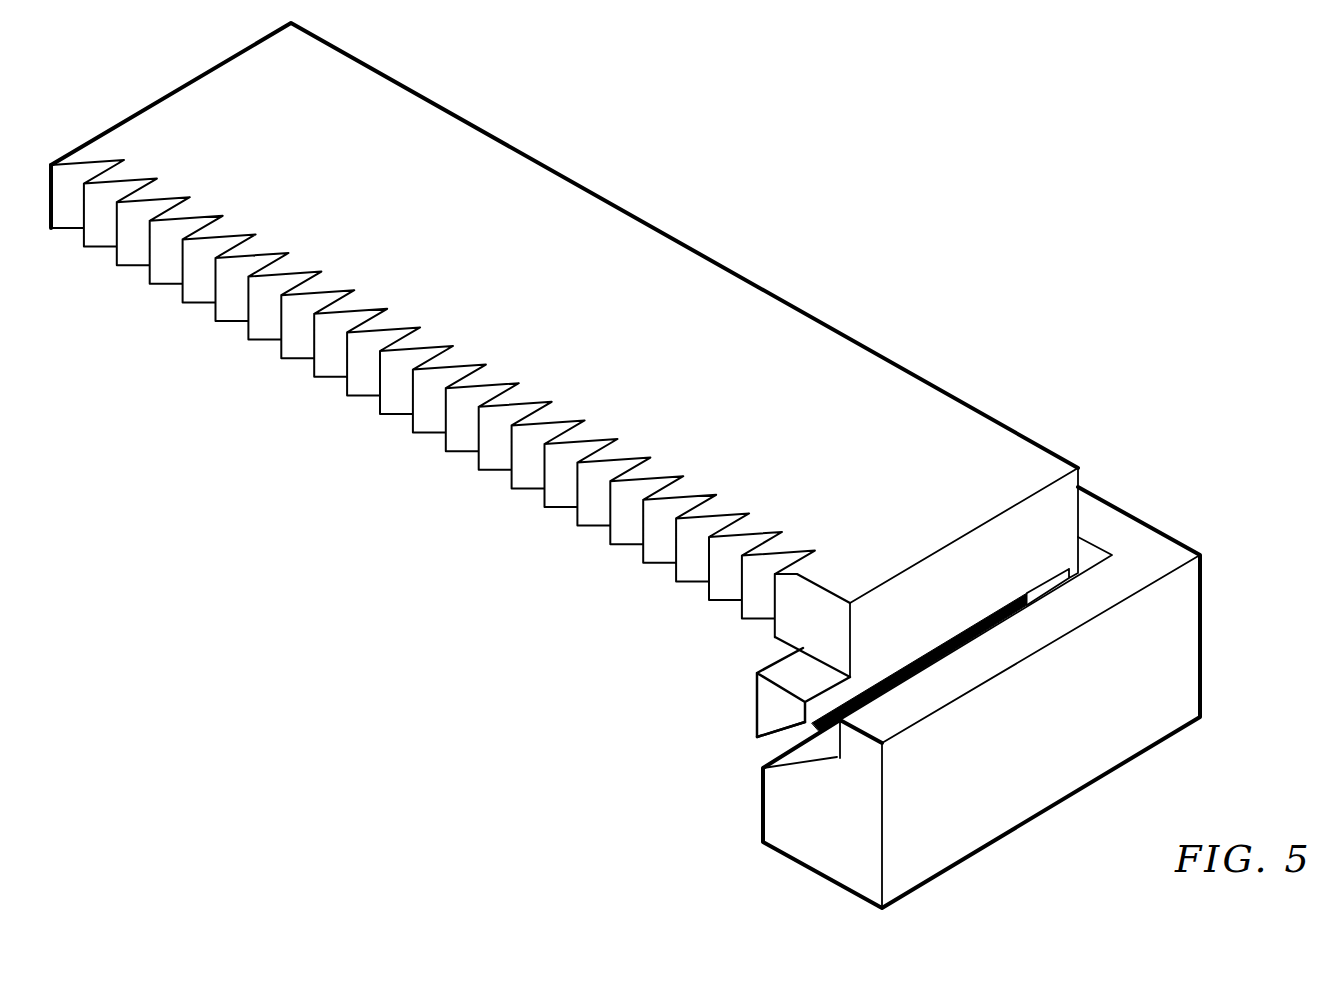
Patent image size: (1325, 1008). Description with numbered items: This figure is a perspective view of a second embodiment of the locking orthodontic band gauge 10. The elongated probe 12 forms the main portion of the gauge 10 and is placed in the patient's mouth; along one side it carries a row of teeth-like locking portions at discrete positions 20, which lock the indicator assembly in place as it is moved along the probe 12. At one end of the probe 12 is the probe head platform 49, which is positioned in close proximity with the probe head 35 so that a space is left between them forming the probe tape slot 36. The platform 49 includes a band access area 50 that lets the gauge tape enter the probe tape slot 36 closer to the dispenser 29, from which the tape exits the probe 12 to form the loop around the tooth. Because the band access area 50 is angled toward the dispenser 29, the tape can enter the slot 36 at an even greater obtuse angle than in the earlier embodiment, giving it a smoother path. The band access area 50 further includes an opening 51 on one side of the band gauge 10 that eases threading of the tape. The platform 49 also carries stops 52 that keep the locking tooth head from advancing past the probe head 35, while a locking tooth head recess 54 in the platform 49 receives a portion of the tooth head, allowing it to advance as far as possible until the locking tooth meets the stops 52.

The gauge 10 is at (623, 170).
The probe 12 is at (698, 283).
The teeth-like locking portions 20 is at (433, 415).
The dispenser 29 is at (1087, 555).
The probe head 35 is at (1193, 643).
The probe tape slot 36 is at (828, 722).
The probe head platform 49 is at (948, 562).
The band access area 50 is at (990, 617).
The opening 51 is at (777, 743).
The stops 52 is at (765, 710).
The locking tooth head recess 54 is at (813, 590).